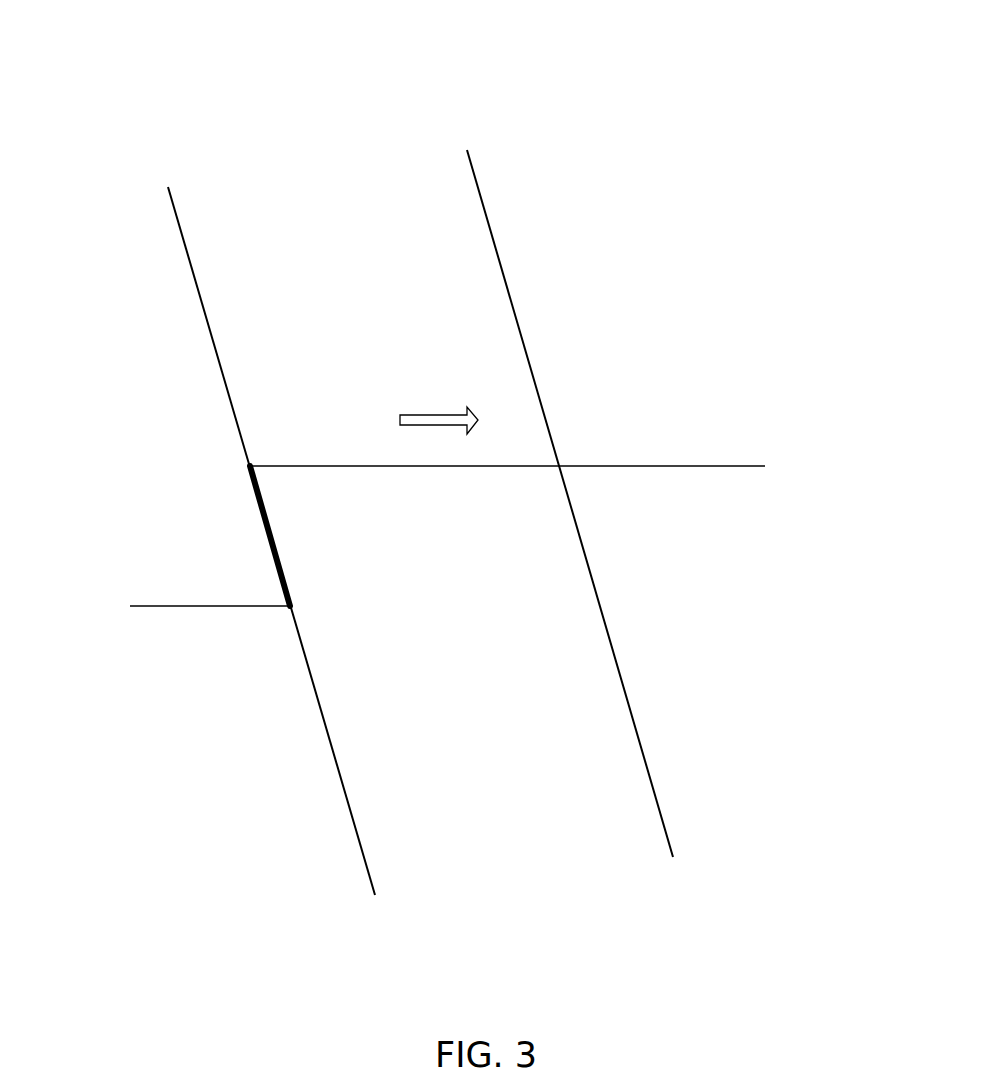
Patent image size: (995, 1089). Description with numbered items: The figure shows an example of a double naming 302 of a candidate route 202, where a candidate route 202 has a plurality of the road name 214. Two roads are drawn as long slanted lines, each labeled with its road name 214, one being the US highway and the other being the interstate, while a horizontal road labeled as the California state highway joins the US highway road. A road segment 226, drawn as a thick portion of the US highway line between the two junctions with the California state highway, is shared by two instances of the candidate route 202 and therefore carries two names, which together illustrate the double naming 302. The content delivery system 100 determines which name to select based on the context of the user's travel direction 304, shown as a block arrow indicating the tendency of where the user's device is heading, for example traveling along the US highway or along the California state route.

The content delivery system 100 is at (156, 76).
The candidate route 202 is at (199, 296).
The road name 214 is at (496, 132).
The road segment 226 is at (240, 546).
The double naming 302 is at (422, 543).
The user's travel direction 304 is at (438, 413).